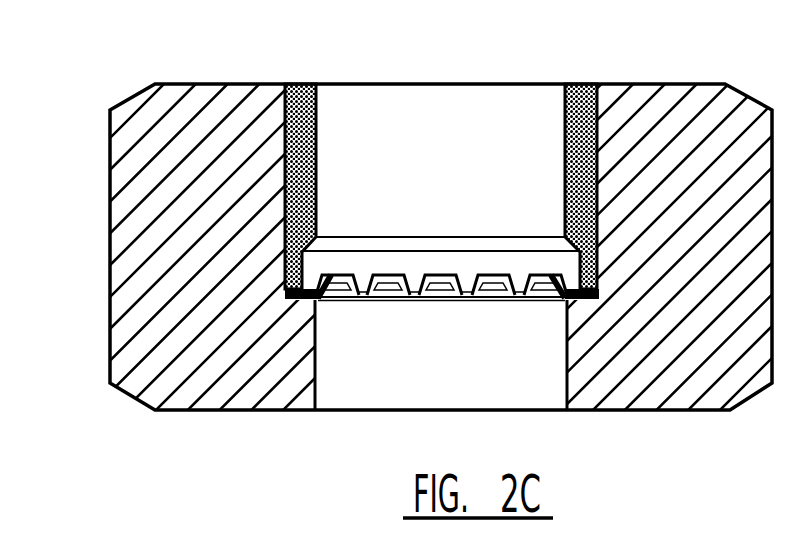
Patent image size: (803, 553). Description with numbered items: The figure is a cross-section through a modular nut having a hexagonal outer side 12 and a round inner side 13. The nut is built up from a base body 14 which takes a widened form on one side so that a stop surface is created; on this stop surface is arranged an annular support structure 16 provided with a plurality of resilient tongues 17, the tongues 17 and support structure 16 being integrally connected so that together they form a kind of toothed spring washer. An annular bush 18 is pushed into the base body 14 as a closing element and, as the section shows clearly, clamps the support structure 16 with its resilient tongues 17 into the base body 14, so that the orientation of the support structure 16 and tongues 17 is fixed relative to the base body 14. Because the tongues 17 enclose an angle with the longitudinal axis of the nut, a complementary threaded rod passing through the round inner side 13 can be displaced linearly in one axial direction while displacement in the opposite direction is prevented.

The hexagonal outer side 12 is at (227, 84).
The base body 14 is at (137, 239).
The annular bush 18 is at (287, 173).
The resilient tongues 17 is at (442, 276).
The round inner side 13 is at (567, 352).
The annular support structure 16 is at (297, 300).